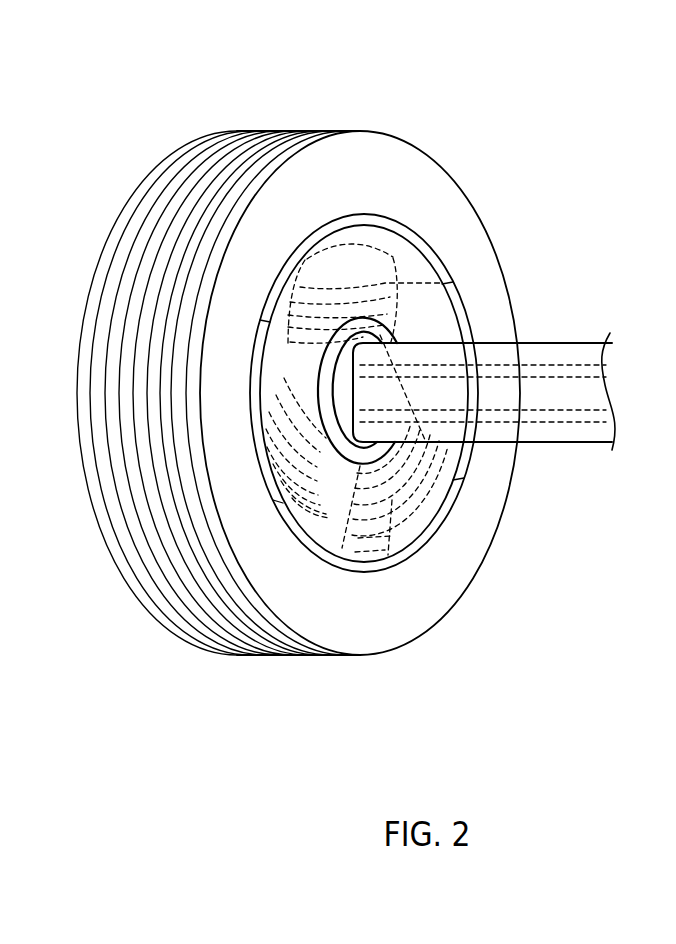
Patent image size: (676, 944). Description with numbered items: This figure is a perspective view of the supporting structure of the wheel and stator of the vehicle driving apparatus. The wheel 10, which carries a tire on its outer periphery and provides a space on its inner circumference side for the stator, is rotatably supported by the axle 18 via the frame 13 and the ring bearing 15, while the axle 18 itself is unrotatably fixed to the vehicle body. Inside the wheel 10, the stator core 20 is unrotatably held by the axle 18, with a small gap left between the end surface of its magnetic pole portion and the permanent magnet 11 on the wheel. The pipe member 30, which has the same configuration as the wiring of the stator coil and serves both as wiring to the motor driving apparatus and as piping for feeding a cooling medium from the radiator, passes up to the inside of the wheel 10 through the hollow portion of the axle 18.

The wheel 10 is at (250, 131).
The permanent magnet 11 is at (440, 250).
The frame 13 is at (440, 307).
The ring bearing 15 is at (276, 374).
The axle 18 is at (567, 343).
The stator core 20 is at (450, 523).
The pipe member 30 is at (553, 382).